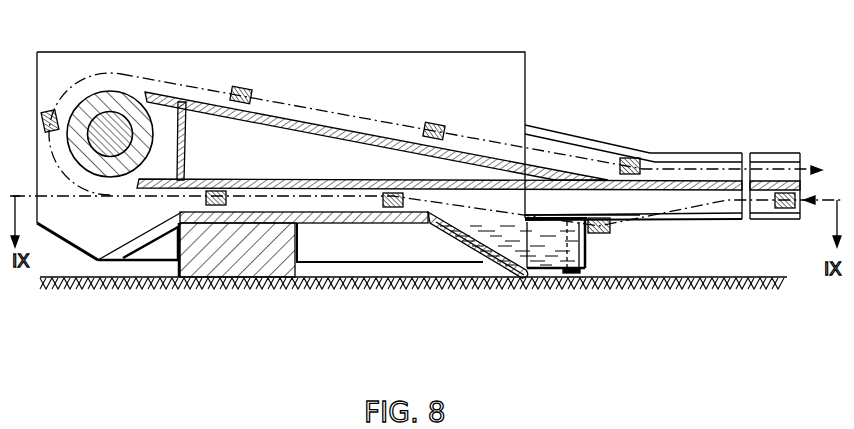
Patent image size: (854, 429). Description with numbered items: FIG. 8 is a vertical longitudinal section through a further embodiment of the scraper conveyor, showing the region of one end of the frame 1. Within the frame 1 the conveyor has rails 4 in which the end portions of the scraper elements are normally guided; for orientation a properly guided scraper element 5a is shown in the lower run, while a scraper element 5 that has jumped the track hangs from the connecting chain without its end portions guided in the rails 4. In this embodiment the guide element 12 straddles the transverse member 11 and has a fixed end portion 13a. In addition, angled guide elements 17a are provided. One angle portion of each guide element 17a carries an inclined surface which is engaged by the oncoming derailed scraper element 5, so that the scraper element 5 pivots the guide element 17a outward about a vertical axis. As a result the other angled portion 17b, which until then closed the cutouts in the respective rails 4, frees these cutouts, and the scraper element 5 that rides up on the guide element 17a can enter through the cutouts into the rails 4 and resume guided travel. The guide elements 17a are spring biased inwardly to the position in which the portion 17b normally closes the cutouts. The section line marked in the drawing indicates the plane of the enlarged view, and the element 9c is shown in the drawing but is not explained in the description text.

The frame 1 is at (207, 63).
The rail 4 is at (677, 200).
The scraper element 5 is at (610, 233).
The scraper element 5a is at (781, 208).
The support pad 9c is at (580, 270).
The transverse member 11 is at (203, 268).
The guide element 12 is at (330, 217).
The fixed end portion 13a is at (455, 240).
The guide element 17a is at (548, 258).
The angled portion 17b is at (505, 242).